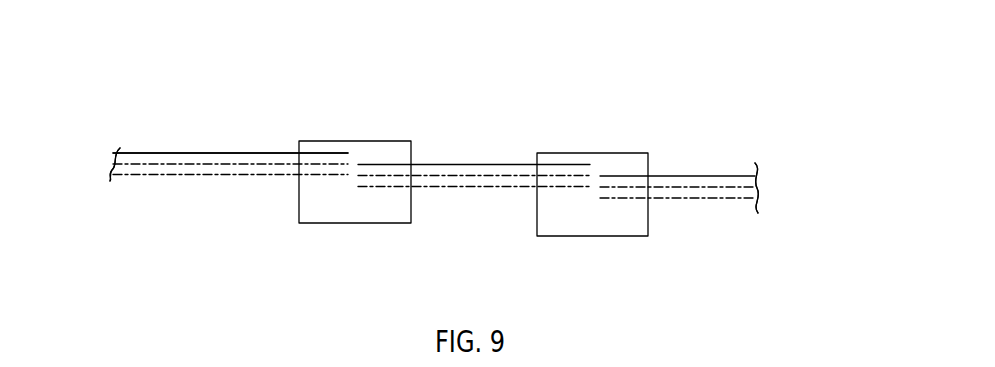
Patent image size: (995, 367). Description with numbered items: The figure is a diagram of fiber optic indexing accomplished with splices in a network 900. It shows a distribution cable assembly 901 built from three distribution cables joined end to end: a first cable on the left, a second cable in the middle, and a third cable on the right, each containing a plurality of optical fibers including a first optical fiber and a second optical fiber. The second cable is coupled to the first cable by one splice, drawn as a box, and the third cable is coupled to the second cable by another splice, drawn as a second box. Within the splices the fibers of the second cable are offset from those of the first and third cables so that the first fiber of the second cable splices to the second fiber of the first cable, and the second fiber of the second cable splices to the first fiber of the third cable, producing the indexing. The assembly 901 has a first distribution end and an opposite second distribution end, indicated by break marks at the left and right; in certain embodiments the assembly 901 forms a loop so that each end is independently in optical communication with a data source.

The network 900 is at (870, 98).
The distribution cable assembly 901 is at (458, 243).